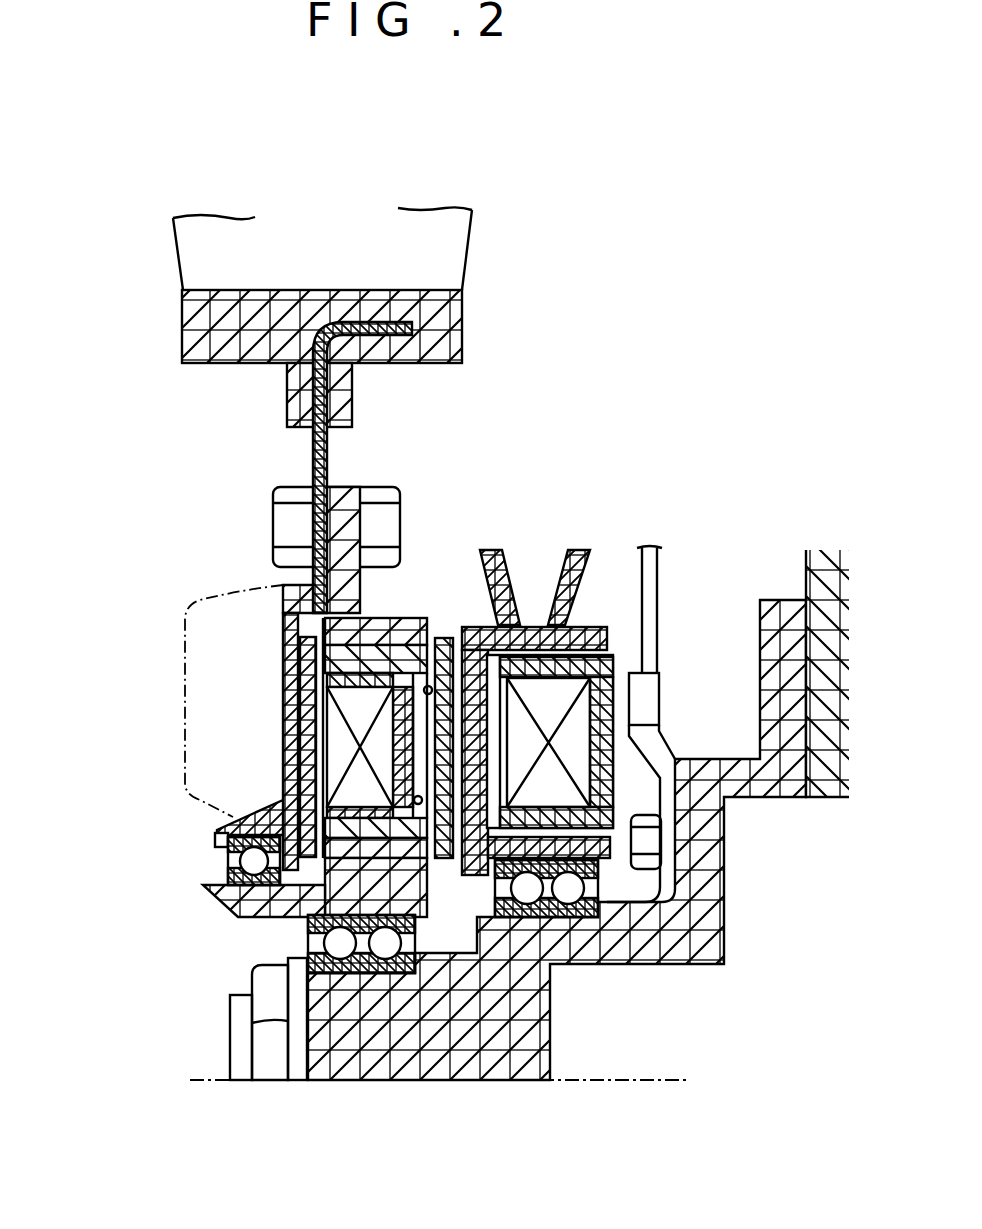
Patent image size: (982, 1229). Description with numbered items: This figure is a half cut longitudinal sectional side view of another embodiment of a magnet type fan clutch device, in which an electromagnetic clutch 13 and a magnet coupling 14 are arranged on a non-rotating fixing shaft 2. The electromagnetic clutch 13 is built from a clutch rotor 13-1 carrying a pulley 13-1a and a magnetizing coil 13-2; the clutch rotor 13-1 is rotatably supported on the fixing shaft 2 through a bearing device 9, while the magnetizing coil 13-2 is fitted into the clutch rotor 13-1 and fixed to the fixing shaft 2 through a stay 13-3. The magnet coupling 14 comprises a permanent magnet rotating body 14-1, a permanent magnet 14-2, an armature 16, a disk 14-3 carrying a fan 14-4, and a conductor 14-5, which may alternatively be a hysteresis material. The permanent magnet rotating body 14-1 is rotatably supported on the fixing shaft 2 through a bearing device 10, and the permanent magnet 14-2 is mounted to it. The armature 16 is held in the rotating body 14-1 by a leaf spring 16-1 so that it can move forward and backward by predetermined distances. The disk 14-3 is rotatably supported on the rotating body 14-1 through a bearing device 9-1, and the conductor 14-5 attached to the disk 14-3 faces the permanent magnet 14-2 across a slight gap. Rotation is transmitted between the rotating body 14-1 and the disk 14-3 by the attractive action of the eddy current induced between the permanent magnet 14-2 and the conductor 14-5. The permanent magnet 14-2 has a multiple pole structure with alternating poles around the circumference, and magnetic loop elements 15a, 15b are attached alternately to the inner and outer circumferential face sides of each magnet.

The fixing shaft 2 is at (455, 1060).
The bearing device 9 is at (585, 918).
The bearing device 9-1 is at (226, 877).
The bearing device 10 is at (305, 920).
The electromagnetic clutch 13 is at (603, 680).
The clutch rotor 13-1 is at (607, 632).
The pulley 13-1a is at (555, 580).
The magnetizing coil 13-2 is at (580, 727).
The stay 13-3 is at (650, 752).
The magnet coupling 14 is at (410, 600).
The permanent magnet rotating body 14-1 is at (233, 903).
The permanent magnet 14-2 is at (345, 747).
The disk 14-3 is at (343, 490).
The fan 14-4 is at (207, 268).
The conductor 14-5 is at (300, 680).
The magnetic loop element 15a is at (335, 833).
The magnetic loop element 15b is at (338, 655).
The armature 16 is at (443, 637).
The leaf spring 16-1 is at (427, 727).